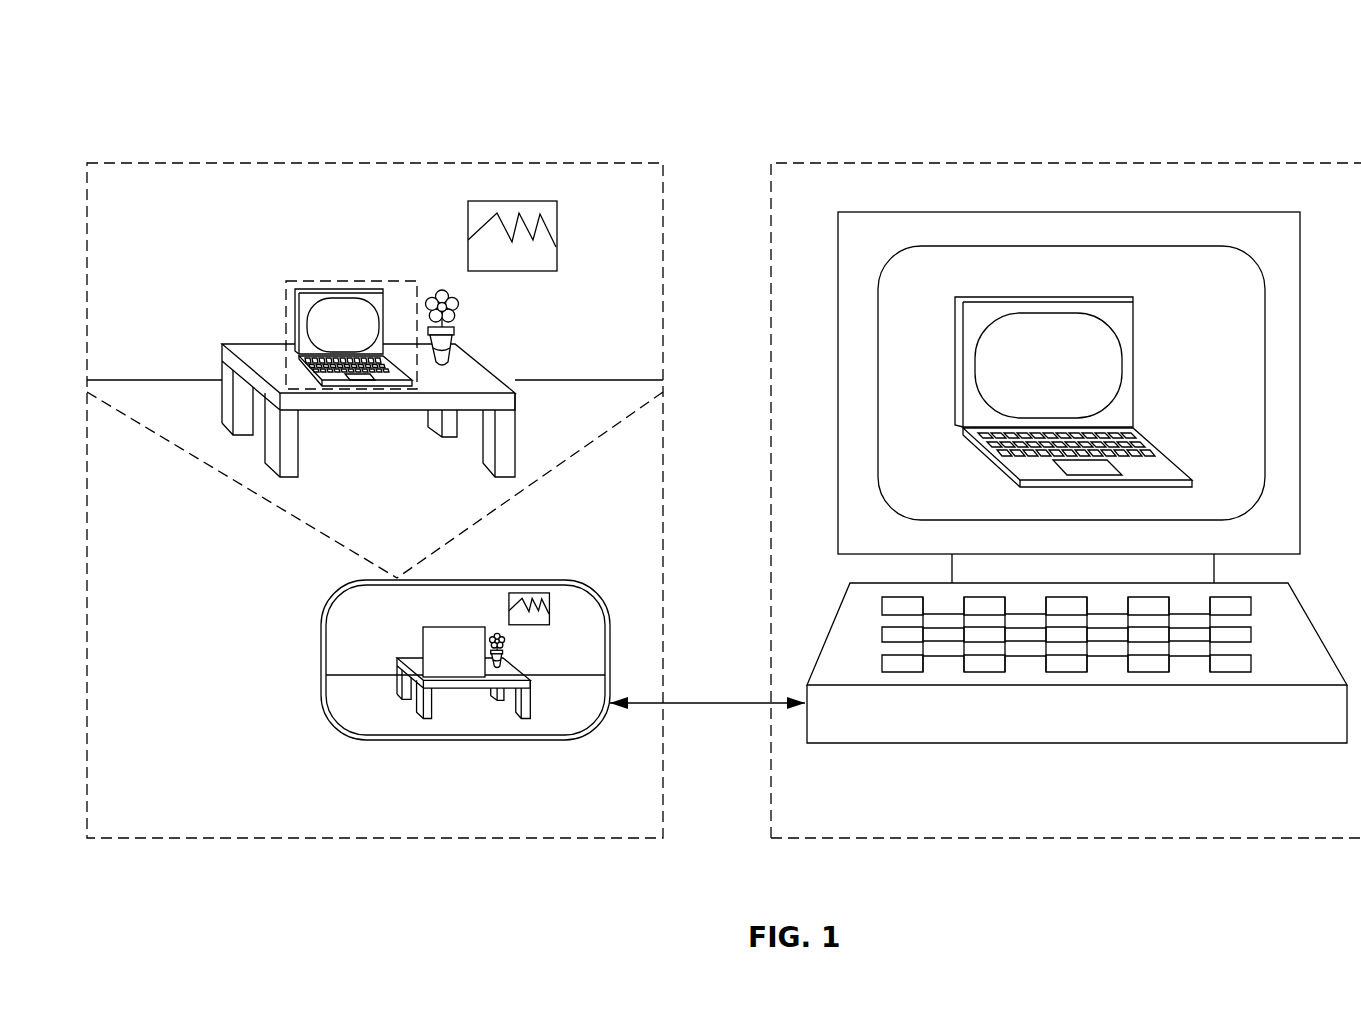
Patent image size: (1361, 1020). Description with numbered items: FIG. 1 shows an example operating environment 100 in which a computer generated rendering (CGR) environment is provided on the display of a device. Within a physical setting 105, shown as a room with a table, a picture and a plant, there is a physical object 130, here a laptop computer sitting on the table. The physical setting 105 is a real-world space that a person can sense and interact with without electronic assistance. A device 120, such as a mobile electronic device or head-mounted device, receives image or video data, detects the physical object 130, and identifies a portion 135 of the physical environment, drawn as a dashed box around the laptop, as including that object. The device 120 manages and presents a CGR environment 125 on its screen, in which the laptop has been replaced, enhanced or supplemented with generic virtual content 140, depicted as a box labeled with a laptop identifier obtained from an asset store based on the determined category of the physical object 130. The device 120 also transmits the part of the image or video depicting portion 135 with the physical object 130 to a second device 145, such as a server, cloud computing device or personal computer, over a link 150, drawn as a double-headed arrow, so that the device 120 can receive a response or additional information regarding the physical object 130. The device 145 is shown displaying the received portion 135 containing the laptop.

The operating environment 100 is at (205, 98).
The physical setting 105 is at (156, 201).
The device 120 is at (321, 649).
The CGR environment 125 is at (385, 618).
The physical object 130 is at (338, 290).
The portion of the physical environment 135 is at (287, 294).
The generic virtual content 140 is at (465, 627).
The device 145 is at (1008, 212).
The link 150 is at (722, 705).